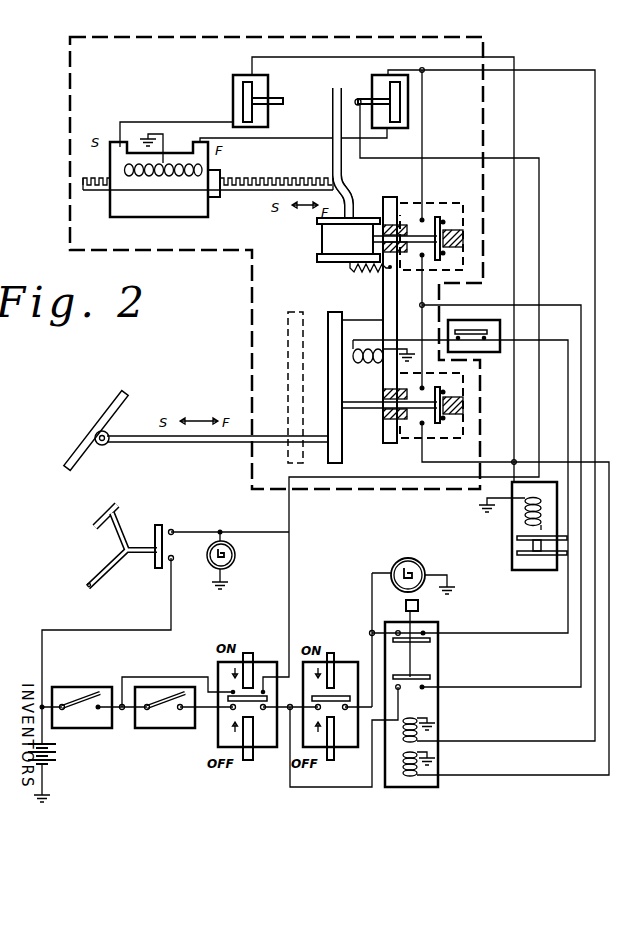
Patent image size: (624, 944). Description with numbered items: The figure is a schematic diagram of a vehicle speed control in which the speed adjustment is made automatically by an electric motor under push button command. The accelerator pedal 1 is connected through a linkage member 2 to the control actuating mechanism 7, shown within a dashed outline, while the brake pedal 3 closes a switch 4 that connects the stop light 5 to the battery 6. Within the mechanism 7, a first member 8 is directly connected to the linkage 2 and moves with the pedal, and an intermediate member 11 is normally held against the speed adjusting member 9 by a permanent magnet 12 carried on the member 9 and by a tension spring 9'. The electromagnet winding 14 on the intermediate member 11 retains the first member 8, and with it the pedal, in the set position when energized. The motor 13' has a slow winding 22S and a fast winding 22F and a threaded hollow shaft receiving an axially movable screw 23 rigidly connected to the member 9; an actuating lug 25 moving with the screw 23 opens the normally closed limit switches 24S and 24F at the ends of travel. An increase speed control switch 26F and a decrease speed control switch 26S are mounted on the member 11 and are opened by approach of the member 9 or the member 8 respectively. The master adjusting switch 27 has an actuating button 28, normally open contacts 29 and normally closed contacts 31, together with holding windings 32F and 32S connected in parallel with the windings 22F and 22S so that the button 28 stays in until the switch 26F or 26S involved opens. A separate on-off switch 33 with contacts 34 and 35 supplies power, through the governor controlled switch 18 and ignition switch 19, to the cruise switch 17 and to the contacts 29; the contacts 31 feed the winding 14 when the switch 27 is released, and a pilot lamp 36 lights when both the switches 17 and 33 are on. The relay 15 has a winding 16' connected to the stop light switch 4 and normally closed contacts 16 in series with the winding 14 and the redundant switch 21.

The accelerator pedal 1 is at (108, 406).
The linkage member 2 is at (138, 434).
The brake pedal 3 is at (102, 513).
The switch 4 is at (166, 528).
The stop light 5 is at (235, 553).
The battery 6 is at (46, 772).
The control actuating mechanism 7 is at (485, 41).
The first member 8 is at (328, 360).
The speed adjusting member 9 is at (356, 184).
The tension spring 9' is at (349, 280).
The intermediate member 11 is at (385, 298).
The permanent magnet 12 is at (330, 238).
The motor 13' is at (159, 192).
The electromagnet winding 14 is at (357, 364).
The relay 15 is at (540, 570).
The relay contacts 16 is at (517, 554).
The relay winding 16' is at (504, 527).
The on-off switch 17 is at (348, 748).
The governor controlled switch 18 is at (178, 729).
The ignition switch 19 is at (88, 729).
The redundant switch 21 is at (490, 352).
The slow winding 22S is at (138, 176).
The fast winding 22F is at (182, 176).
The screw 23 is at (261, 178).
The slow limit switch 24S is at (233, 97).
The fast limit switch 24F is at (408, 104).
The actuating lug 25 is at (331, 97).
The increase speed control switch 26F is at (426, 203).
The decrease speed control switch 26S is at (452, 441).
The master adjusting switch 27 is at (425, 789).
The actuating button 28 is at (406, 606).
The normally open contacts 29 is at (432, 676).
The normally closed contacts 31 is at (420, 645).
The fast holding winding 32F is at (427, 737).
The slow holding winding 32S is at (427, 770).
The on-off switch 33 is at (257, 748).
The contacts 34 is at (256, 712).
The contacts 35 is at (256, 688).
The pilot lamp 36 is at (415, 563).